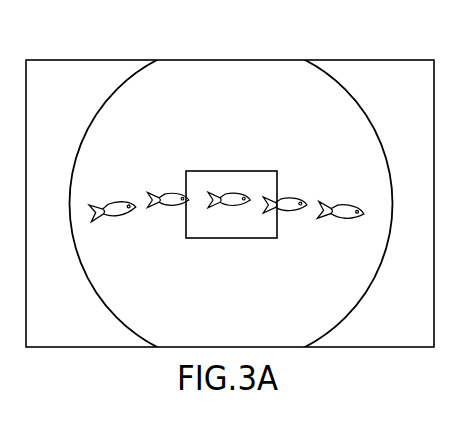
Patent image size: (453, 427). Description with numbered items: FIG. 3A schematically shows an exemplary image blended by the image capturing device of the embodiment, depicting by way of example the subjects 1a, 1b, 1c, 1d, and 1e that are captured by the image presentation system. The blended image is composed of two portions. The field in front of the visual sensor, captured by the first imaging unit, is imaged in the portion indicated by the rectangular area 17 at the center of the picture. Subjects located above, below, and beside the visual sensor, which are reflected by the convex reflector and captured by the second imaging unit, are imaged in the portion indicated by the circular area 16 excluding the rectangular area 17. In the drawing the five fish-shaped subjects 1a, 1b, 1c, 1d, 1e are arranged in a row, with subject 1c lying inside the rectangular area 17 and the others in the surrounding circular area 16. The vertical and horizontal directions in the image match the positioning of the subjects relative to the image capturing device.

The circular area 16 is at (233, 59).
The rectangular area 17 is at (258, 239).
The subject 1a is at (118, 203).
The subject 1b is at (170, 191).
The subject 1c is at (240, 192).
The subject 1d is at (298, 199).
The subject 1e is at (347, 206).